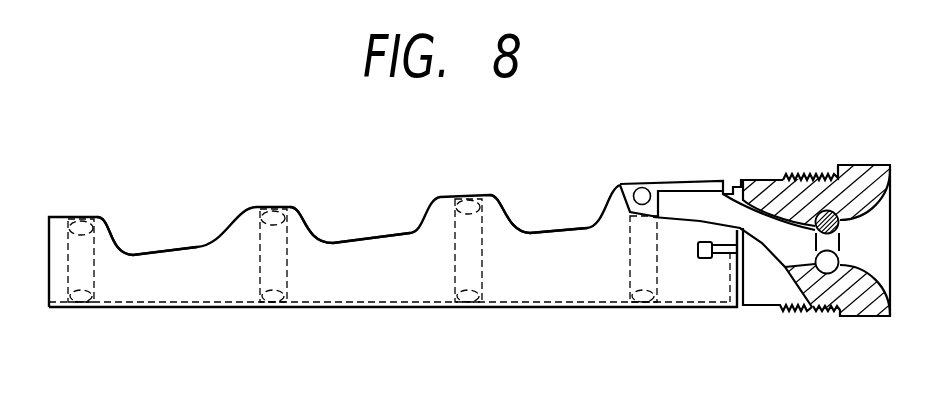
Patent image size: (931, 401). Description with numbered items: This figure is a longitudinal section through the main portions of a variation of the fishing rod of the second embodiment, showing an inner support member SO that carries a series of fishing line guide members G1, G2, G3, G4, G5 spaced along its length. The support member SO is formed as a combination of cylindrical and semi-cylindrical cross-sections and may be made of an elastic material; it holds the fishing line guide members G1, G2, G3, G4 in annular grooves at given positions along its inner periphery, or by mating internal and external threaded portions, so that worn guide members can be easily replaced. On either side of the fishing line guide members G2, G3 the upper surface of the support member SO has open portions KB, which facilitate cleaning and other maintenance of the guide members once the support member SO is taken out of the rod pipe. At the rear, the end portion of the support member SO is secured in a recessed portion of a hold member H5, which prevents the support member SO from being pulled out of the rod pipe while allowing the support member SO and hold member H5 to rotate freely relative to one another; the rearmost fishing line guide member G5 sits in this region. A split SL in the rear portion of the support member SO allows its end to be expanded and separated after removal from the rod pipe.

The support member SO is at (392, 283).
The open portions KB is at (197, 247).
The fishing line guide member G1 is at (82, 222).
The fishing line guide member G2 is at (272, 215).
The fishing line guide member G3 is at (468, 205).
The fishing line guide member G4 is at (648, 192).
The fishing line guide member G5 is at (836, 212).
The split SL is at (715, 255).
The hold member H5 is at (841, 290).